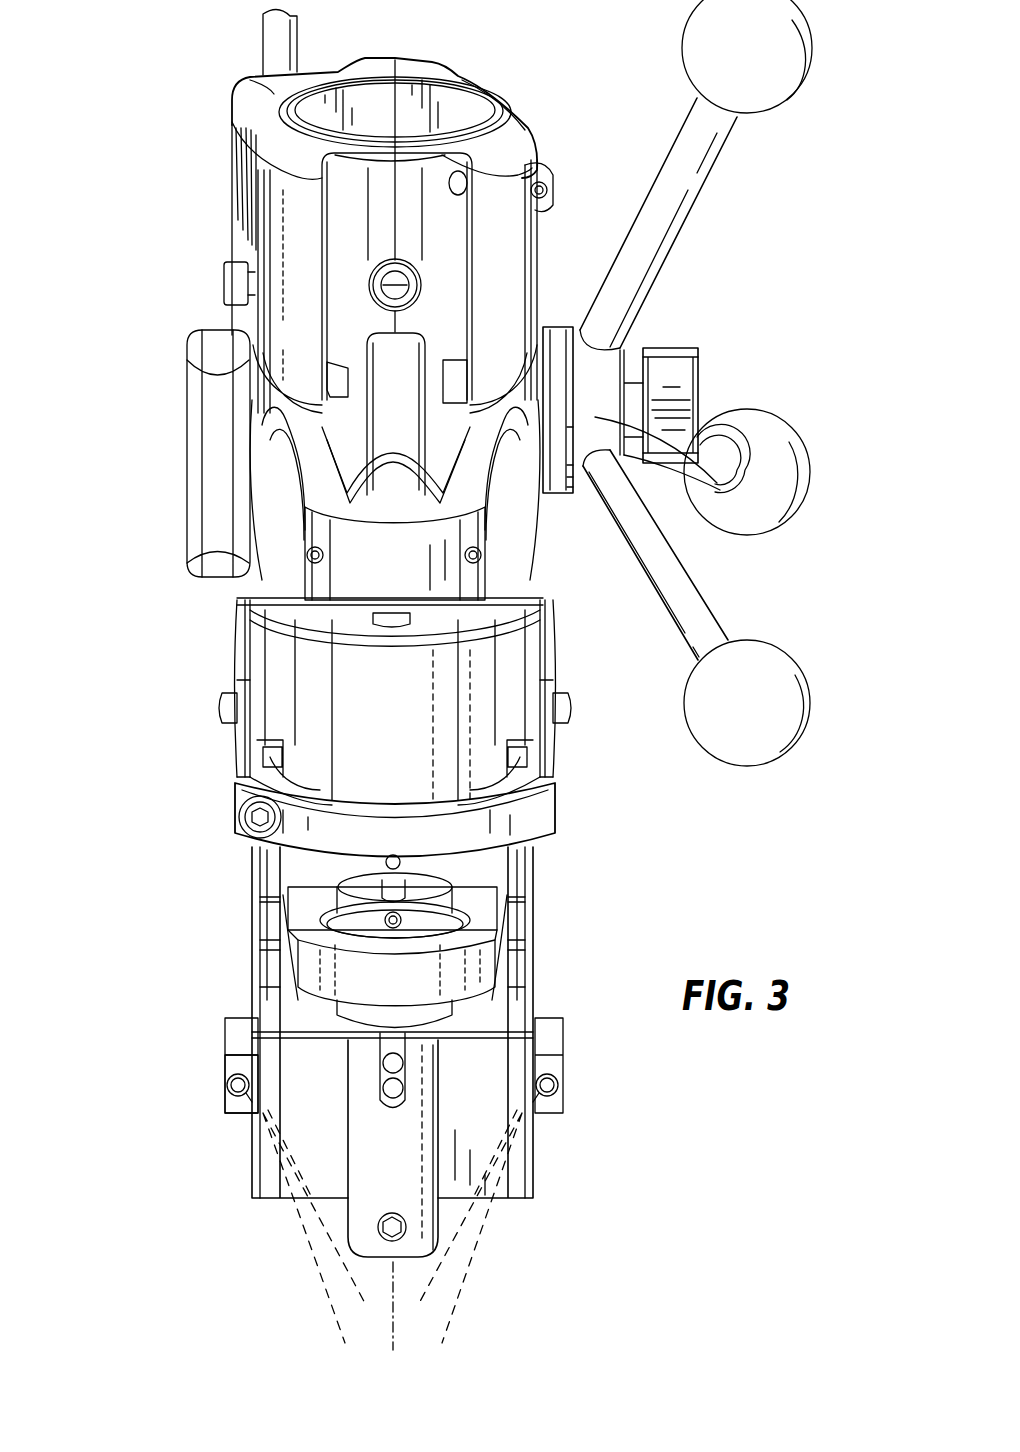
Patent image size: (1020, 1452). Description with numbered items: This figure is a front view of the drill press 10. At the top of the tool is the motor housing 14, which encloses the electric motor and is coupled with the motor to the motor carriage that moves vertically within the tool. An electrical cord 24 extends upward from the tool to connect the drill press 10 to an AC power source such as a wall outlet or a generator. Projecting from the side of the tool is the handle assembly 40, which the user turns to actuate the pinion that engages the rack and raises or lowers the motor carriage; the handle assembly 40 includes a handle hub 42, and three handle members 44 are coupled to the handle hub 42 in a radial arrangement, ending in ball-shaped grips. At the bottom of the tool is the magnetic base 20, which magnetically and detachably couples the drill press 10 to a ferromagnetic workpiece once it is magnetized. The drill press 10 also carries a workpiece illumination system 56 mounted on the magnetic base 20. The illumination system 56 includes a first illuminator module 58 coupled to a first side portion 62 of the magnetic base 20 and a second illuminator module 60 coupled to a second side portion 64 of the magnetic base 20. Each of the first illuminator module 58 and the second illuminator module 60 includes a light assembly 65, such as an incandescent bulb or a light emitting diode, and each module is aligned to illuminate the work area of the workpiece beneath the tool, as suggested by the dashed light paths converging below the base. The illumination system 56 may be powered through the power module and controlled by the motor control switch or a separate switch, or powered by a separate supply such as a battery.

The drill press 10 is at (106, 218).
The motor housing 14 is at (512, 262).
The magnetic base 20 is at (282, 1047).
The electrical cord 24 is at (276, 37).
The handle assembly 40 is at (645, 322).
The handle hub 42 is at (717, 487).
The handle members 44 is at (697, 177).
The workpiece illumination system 56 is at (553, 998).
The first illuminator module 58 is at (563, 1068).
The second illuminator module 60 is at (225, 1073).
The first side portion 62 is at (535, 1167).
The second side portion 64 is at (252, 1152).
The light assembly 65 is at (233, 1097).